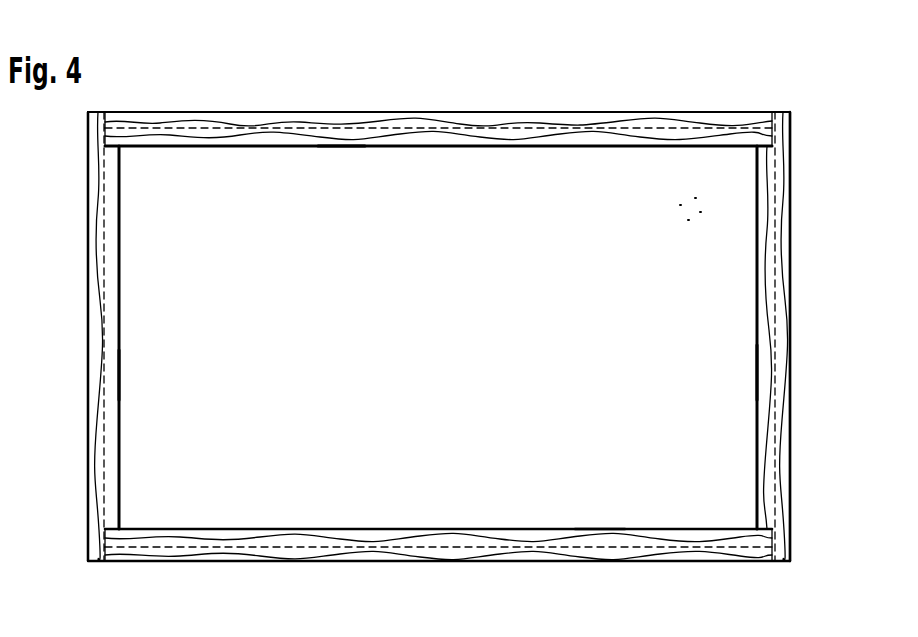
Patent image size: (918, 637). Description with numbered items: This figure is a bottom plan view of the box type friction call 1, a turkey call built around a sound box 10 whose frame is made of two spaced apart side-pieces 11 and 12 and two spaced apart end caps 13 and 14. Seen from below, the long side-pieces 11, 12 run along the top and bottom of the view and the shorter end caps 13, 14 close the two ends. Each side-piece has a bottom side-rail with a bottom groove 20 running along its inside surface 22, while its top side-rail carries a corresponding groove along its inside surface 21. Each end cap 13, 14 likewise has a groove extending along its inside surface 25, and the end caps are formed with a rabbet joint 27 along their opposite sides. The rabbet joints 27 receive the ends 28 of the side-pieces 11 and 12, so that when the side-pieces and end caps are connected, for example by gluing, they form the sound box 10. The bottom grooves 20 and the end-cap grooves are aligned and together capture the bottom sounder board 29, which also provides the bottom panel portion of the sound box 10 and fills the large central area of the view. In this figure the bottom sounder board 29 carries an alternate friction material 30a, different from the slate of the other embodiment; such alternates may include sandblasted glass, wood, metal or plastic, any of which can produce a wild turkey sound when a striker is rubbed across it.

The box type friction call 1 is at (423, 60).
The sound box 10 is at (672, 100).
The side-piece 11 is at (443, 118).
The side-piece 12 is at (410, 548).
The end cap 13 is at (90, 308).
The end cap 14 is at (780, 455).
The bottom groove 20 is at (625, 133).
The inside surface of top side-rail 21 is at (318, 152).
The inside surface of bottom side-rail 22 is at (622, 523).
The inside surface of end cap 25 is at (120, 398).
The rabbet joint 27 is at (104, 115).
The ends of the side-pieces 28 is at (131, 125).
The bottom sounder board 29 is at (690, 207).
The alternate friction material 30a is at (453, 350).